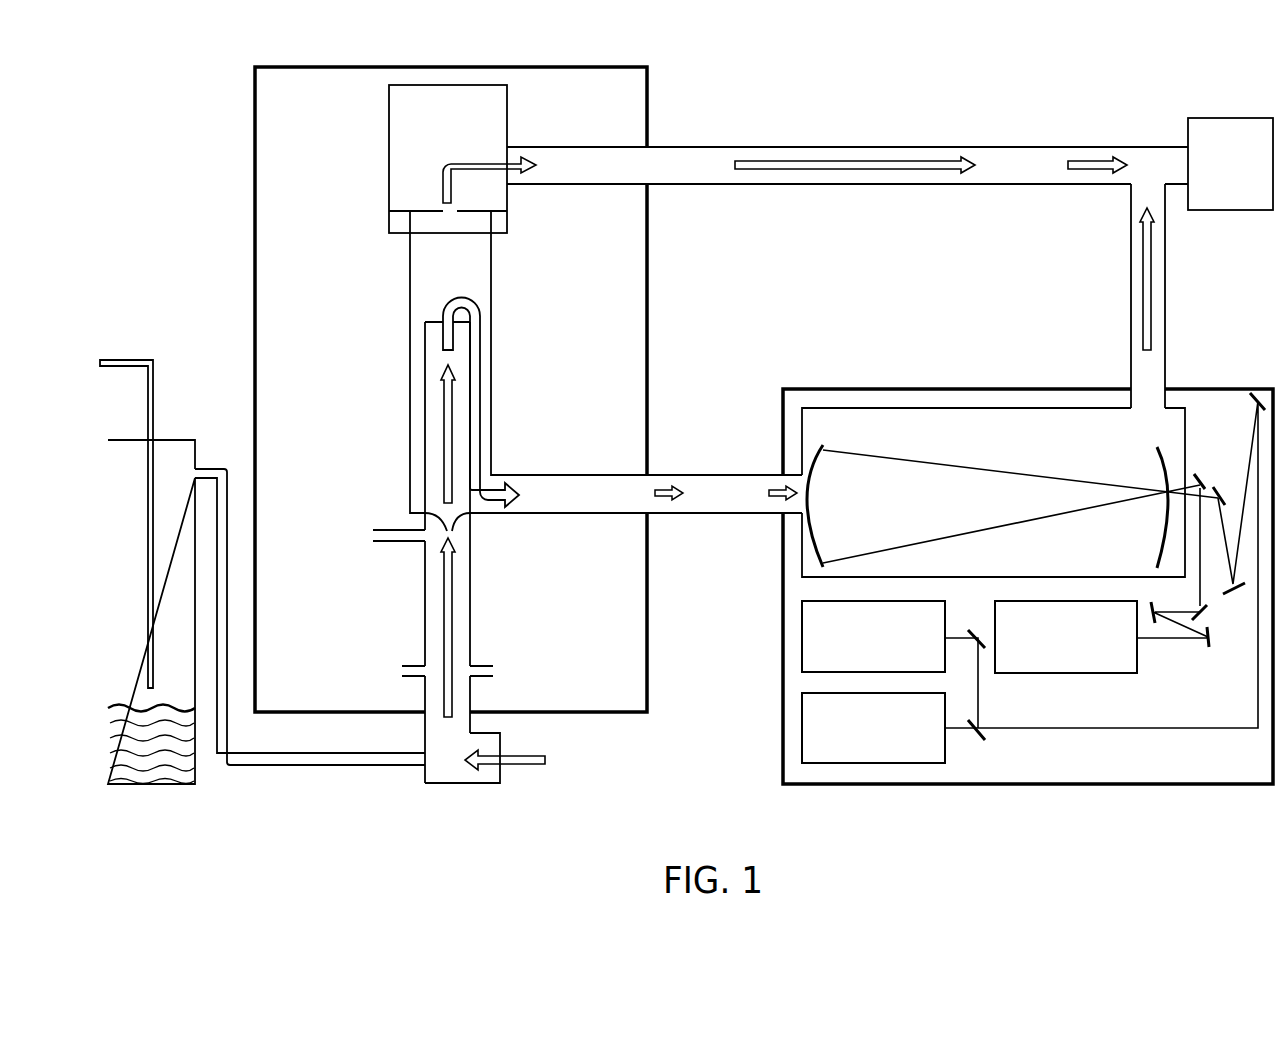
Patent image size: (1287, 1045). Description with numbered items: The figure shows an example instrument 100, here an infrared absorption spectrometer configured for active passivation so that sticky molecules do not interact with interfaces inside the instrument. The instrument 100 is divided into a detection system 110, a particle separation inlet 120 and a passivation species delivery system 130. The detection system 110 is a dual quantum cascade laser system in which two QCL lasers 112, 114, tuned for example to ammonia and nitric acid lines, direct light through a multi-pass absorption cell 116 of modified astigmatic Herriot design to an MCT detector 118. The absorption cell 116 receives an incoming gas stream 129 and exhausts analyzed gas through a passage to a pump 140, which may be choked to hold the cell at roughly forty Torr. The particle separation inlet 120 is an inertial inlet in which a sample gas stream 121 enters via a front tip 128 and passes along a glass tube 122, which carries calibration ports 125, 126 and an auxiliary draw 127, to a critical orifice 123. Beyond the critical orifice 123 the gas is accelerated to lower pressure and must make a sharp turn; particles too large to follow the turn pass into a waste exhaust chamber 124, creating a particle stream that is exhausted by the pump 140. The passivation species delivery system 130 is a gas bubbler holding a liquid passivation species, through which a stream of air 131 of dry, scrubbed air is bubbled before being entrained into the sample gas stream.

The instrument 100 is at (1092, 100).
The detection system 110 is at (1210, 390).
The QCL laser 112 is at (802, 630).
The QCL laser 114 is at (802, 720).
The multi-pass absorption cell 116 is at (940, 405).
The MCT detector 118 is at (1075, 674).
The particle separation inlet 120 is at (648, 609).
The sample gas stream 121 is at (513, 753).
The glass tube 122 is at (470, 609).
The critical orifice 123 is at (491, 307).
The waste exhaust chamber 124 is at (389, 165).
The calibration port 125 is at (415, 664).
The calibration port 126 is at (478, 664).
The auxiliary draw 127 is at (385, 545).
The front tip 128 is at (458, 785).
The gas stream 129 is at (578, 475).
The passivation species delivery system 130 is at (125, 438).
The stream of air 131 is at (128, 357).
The pump 140 is at (1250, 187).